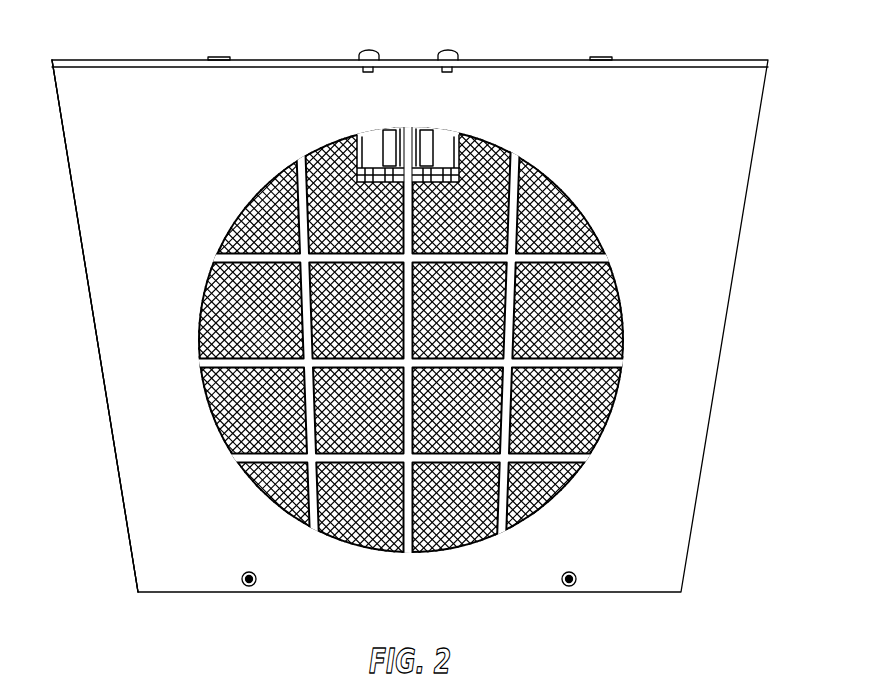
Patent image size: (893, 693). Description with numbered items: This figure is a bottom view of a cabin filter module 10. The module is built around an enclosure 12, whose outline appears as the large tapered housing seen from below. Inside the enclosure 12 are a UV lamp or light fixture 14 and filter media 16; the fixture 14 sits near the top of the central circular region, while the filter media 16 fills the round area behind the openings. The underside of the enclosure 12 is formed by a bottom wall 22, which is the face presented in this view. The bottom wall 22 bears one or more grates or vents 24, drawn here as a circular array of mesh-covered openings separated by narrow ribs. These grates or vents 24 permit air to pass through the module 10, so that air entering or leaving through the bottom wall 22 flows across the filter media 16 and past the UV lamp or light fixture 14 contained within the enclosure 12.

The cabin filter module 10 is at (87, 125).
The enclosure 12 is at (93, 197).
The bottom wall 22 is at (110, 277).
The UV lamp or light fixture 14 is at (373, 156).
The filter media 16 is at (446, 346).
The grates or vents 24 is at (562, 213).